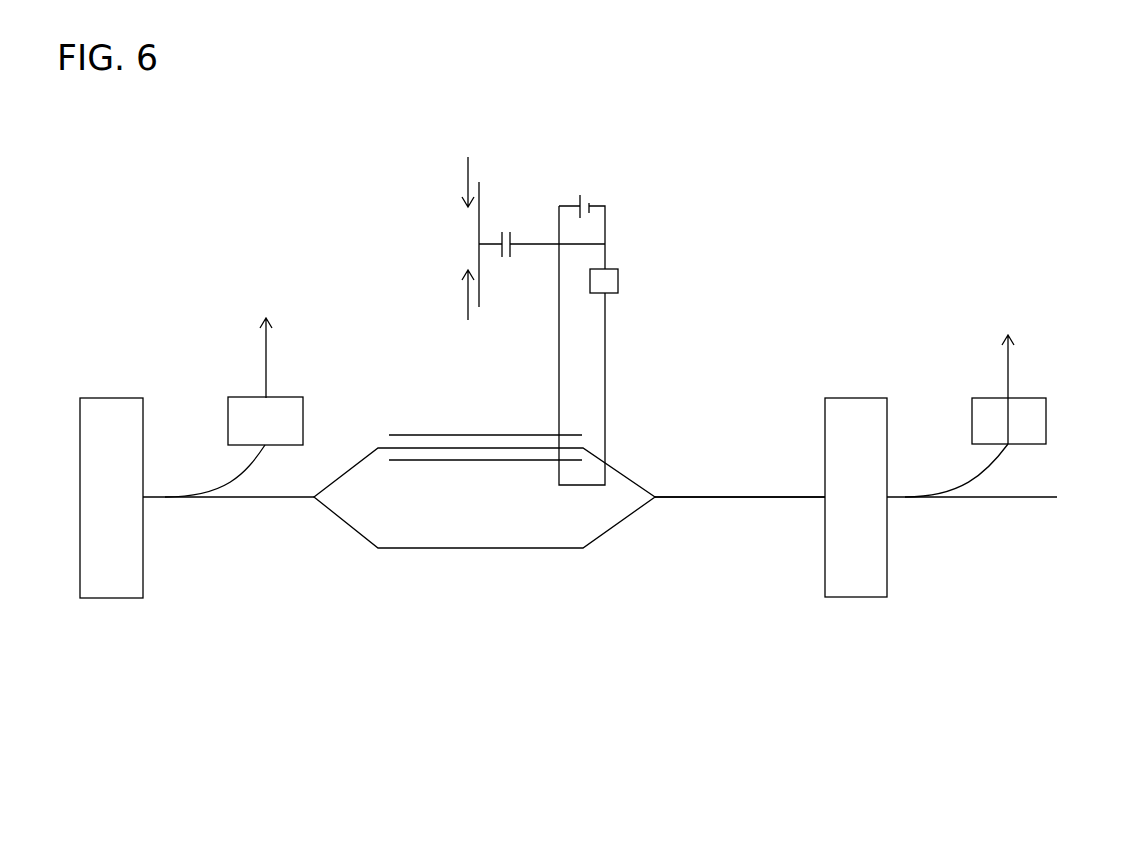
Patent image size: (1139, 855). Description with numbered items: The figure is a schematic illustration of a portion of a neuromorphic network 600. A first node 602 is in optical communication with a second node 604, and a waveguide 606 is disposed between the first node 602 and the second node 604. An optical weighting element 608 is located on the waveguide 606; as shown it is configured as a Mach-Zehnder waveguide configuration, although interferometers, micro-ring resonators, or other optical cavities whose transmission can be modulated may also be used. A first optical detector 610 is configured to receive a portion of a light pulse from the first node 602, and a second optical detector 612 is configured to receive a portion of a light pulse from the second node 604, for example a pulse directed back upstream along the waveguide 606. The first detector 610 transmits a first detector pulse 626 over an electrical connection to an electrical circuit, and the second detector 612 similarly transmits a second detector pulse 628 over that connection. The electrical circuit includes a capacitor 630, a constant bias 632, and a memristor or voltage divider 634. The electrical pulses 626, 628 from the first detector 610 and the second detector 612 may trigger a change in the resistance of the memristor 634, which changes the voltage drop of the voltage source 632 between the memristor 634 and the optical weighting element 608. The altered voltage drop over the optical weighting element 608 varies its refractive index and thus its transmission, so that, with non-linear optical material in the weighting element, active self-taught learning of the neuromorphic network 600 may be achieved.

The neuromorphic network 600 is at (646, 675).
The first node 602 is at (113, 598).
The second node 604 is at (852, 597).
The waveguide 606 is at (720, 497).
The optical weighting element 608 is at (497, 578).
The first optical detector 610 is at (228, 416).
The second optical detector 612 is at (1046, 418).
The first detector pulse 626 is at (366, 264).
The second detector pulse 628 is at (716, 357).
The capacitor 630 is at (512, 238).
The constant bias 632 is at (583, 190).
The memristor 634 is at (618, 281).